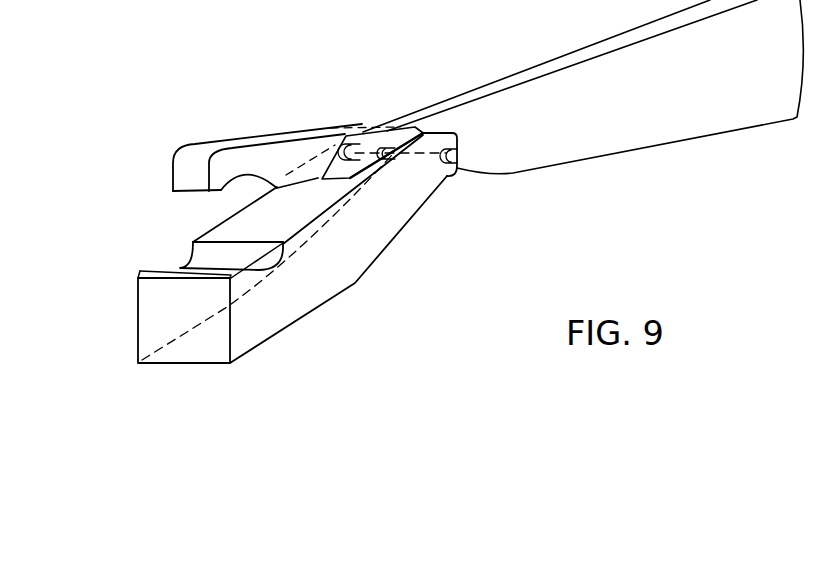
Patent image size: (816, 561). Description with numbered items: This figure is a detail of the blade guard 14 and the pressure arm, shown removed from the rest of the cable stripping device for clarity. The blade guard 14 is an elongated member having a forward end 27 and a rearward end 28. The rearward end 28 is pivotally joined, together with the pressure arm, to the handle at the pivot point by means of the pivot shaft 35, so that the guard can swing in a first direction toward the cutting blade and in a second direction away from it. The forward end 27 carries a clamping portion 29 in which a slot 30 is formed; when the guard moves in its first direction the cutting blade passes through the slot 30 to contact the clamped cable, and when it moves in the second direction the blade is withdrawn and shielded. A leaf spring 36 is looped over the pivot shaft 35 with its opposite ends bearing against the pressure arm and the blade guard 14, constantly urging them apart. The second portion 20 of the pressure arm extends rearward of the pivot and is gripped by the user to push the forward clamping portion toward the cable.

The blade guard 14 is at (365, 263).
The second portion 20 is at (753, 113).
The forward end 27 is at (247, 337).
The rearward end 28 is at (433, 183).
The clamping portion 29 is at (165, 268).
The slot 30 is at (255, 273).
The pivot shaft 35 is at (437, 128).
The leaf spring 36 is at (410, 128).